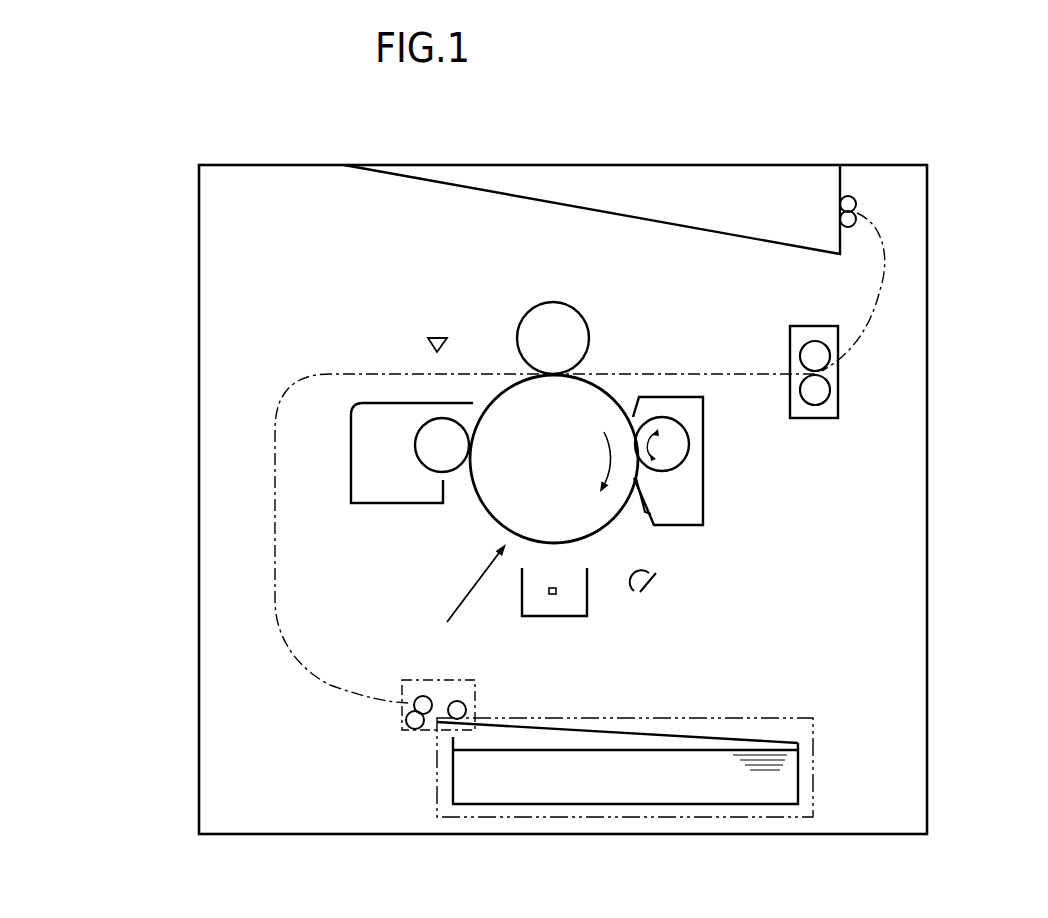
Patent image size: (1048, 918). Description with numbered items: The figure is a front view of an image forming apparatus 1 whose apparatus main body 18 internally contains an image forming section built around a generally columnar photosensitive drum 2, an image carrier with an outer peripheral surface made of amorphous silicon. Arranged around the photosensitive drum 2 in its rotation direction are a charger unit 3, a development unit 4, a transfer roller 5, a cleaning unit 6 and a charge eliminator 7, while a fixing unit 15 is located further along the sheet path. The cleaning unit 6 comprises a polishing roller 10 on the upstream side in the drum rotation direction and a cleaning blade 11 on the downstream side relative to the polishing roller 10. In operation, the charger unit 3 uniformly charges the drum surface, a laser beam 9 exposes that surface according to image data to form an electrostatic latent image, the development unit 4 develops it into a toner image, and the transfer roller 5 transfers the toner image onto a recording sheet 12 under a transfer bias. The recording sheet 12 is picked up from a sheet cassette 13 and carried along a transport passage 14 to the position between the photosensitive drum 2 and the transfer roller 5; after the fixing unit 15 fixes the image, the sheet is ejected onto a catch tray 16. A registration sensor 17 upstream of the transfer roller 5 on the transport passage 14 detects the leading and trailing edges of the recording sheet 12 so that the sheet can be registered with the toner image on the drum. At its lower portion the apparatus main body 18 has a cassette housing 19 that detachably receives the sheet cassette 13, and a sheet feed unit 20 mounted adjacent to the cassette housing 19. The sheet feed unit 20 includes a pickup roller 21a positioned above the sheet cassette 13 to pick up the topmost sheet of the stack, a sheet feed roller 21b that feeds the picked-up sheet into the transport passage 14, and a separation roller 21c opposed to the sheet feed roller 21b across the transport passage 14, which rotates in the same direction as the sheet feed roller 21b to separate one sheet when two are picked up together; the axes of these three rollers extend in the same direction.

The image forming apparatus 1 is at (792, 125).
The photosensitive drum 2 is at (592, 532).
The charger unit 3 is at (553, 617).
The development unit 4 is at (375, 442).
The transfer roller 5 is at (580, 315).
The cleaning unit 6 is at (693, 490).
The charge eliminator 7 is at (646, 586).
The laser beam 9 is at (462, 601).
The polishing roller 10 is at (675, 432).
The cleaning blade 11 is at (645, 500).
The recording sheet 12 is at (708, 770).
The sheet cassette 13 is at (452, 783).
The transport passage 14 is at (273, 590).
The fixing unit 15 is at (840, 383).
The catch tray 16 is at (593, 213).
The registration sensor 17 is at (437, 336).
The apparatus main body 18 is at (927, 593).
The cassette housing 19 is at (768, 817).
The sheet feed unit 20 is at (403, 720).
The pickup roller 21a is at (463, 703).
The sheet feed roller 21b is at (414, 700).
The separation roller 21c is at (413, 729).